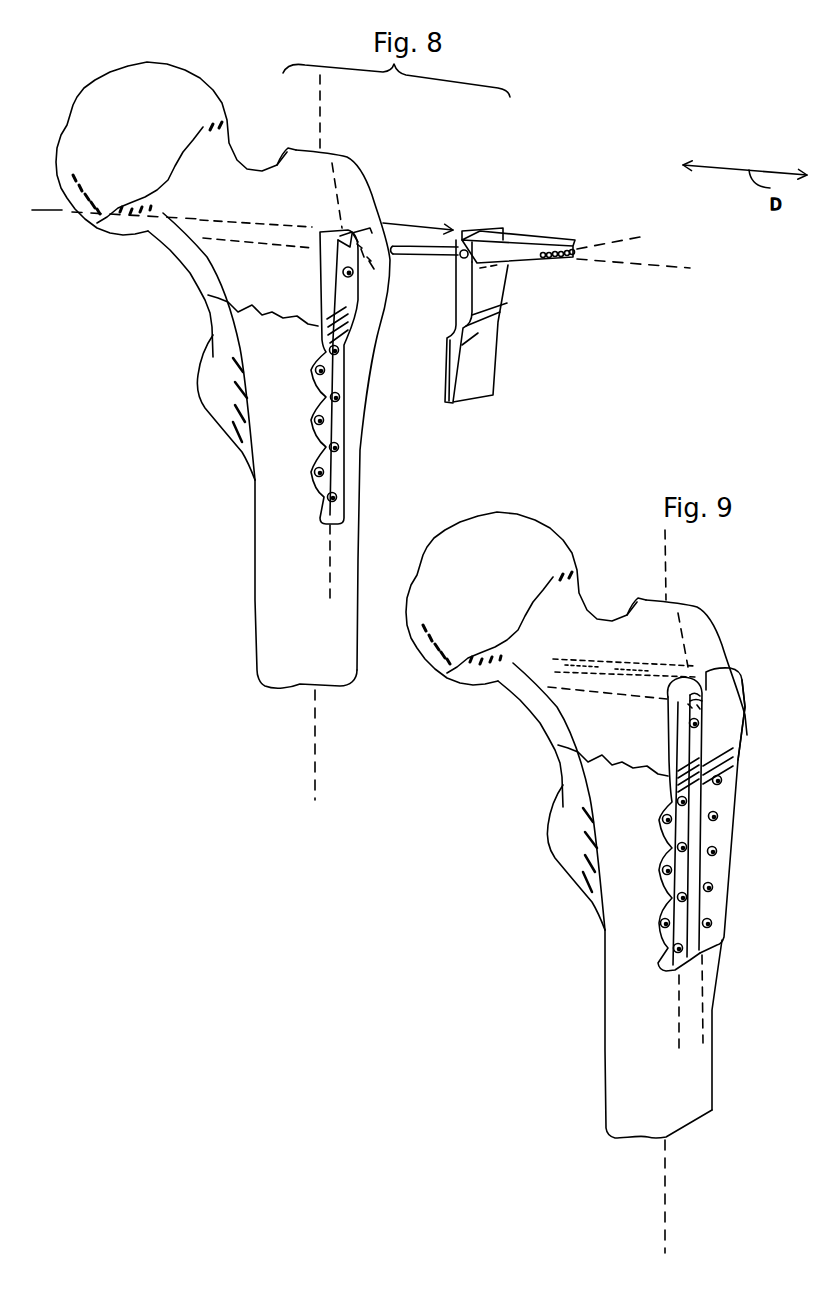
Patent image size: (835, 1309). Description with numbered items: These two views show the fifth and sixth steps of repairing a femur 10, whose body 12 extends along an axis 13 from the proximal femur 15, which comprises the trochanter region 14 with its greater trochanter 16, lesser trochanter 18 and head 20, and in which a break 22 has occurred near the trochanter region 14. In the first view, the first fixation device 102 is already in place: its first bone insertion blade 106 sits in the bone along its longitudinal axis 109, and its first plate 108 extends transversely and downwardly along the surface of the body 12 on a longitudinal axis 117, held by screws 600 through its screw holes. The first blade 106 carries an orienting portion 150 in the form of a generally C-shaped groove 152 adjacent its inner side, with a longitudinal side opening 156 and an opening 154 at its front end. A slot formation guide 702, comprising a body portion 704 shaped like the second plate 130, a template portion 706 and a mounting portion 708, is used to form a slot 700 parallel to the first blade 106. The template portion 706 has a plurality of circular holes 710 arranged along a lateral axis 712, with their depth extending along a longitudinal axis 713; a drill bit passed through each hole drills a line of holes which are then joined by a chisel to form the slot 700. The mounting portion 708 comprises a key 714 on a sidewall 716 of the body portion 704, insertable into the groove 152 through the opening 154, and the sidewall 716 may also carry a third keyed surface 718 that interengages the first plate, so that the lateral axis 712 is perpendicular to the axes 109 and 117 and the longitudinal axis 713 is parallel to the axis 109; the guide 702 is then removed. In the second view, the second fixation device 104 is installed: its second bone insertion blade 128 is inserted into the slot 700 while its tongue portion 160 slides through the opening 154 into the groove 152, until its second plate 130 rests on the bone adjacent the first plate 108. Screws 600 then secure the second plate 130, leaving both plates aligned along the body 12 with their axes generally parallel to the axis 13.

In FIG. 8, the femur 10 is at (182, 655).
In FIG. 9, the femur 10 is at (553, 1072).
In FIG. 8, the body 12 is at (268, 582).
In FIG. 9, the body 12 is at (622, 1034).
In FIG. 8, the axis 13 is at (318, 795).
In FIG. 9, the axis 13 is at (668, 1195).
In FIG. 8, the trochanter region 14 is at (212, 277).
In FIG. 9, the trochanter region 14 is at (552, 720).
In FIG. 8, the proximal femur 15 is at (340, 148).
In FIG. 9, the proximal femur 15 is at (697, 603).
In FIG. 8, the greater trochanter 16 is at (362, 180).
In FIG. 9, the greater trochanter 16 is at (708, 627).
In FIG. 8, the lesser trochanter 18 is at (213, 400).
In FIG. 9, the lesser trochanter 18 is at (552, 833).
In FIG. 8, the head 20 is at (165, 85).
In FIG. 9, the head 20 is at (516, 532).
In FIG. 8, the break 22 is at (226, 300).
In FIG. 9, the break 22 is at (572, 750).
In FIG. 9, the first fixation device 102 is at (657, 945).
In FIG. 9, the second fixation device 104 is at (724, 903).
In FIG. 8, the first bone insertion blade 106 is at (265, 244).
In FIG. 9, the first bone insertion blade 106 is at (616, 700).
In FIG. 8, the first plate 108 is at (322, 435).
In FIG. 9, the first plate 108 is at (667, 840).
In FIG. 8, the longitudinal axis 109 is at (40, 212).
In FIG. 8, the longitudinal axis 117 is at (330, 588).
In FIG. 9, the second bone insertion blade 128 is at (648, 660).
In FIG. 9, the second plate 130 is at (738, 803).
In FIG. 9, the orienting portion 150 is at (694, 702).
In FIG. 8, the groove 152 is at (310, 223).
In FIG. 9, the groove 152 is at (659, 735).
In FIG. 8, the opening 154 is at (328, 229).
In FIG. 9, the opening 154 is at (674, 736).
In FIG. 8, the side opening 156 is at (332, 237).
In FIG. 9, the tongue portion 160 is at (697, 696).
In FIG. 9, the screws 600 is at (661, 924).
In FIG. 8, the slot 700 is at (349, 232).
In FIG. 8, the slot formation guide 702 is at (491, 310).
In FIG. 8, the body portion 704 is at (480, 353).
In FIG. 8, the template portion 706 is at (518, 239).
In FIG. 8, the mounting portion 708 is at (420, 256).
In FIG. 8, the circular holes 710 is at (548, 265).
In FIG. 8, the lateral axis 712 is at (636, 240).
In FIG. 8, the longitudinal axis 713 is at (648, 268).
In FIG. 8, the key 714 is at (430, 286).
In FIG. 8, the sidewall 716 is at (462, 230).
In FIG. 8, the third keyed surface 718 is at (440, 375).